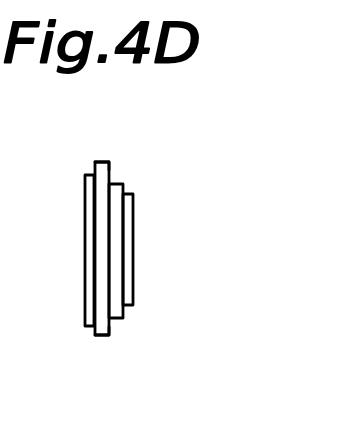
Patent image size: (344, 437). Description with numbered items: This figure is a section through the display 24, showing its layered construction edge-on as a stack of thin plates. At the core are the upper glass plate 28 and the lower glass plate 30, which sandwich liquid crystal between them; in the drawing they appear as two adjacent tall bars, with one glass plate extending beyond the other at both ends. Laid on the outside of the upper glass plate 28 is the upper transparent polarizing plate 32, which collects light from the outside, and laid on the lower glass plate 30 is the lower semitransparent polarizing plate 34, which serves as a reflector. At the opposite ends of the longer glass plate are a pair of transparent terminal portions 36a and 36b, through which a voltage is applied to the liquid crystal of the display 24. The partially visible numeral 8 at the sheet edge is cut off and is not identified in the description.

The display 24 is at (122, 243).
The upper glass plate 28 is at (105, 290).
The lower glass plate 30 is at (122, 258).
The upper transparent polarizing plate 32 is at (89, 205).
The lower semitransparent polarizing plate 34 is at (128, 287).
The transparent terminal portion 36a is at (111, 170).
The transparent terminal portion 36b is at (112, 323).
The partial numeral (cut off at sheet edge) 8 is at (6, 257).